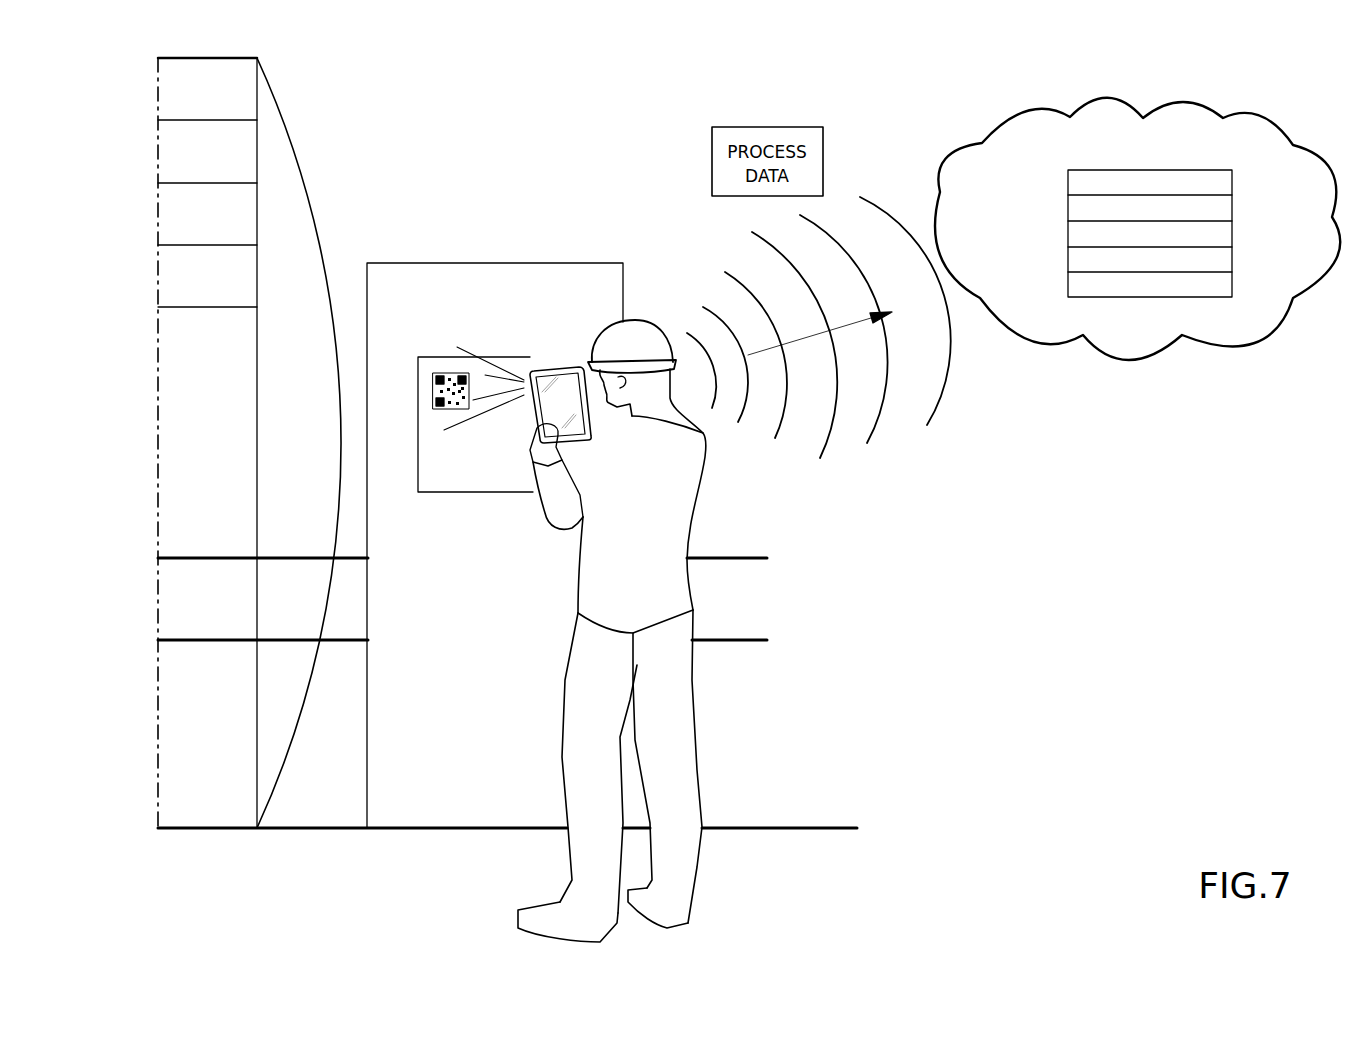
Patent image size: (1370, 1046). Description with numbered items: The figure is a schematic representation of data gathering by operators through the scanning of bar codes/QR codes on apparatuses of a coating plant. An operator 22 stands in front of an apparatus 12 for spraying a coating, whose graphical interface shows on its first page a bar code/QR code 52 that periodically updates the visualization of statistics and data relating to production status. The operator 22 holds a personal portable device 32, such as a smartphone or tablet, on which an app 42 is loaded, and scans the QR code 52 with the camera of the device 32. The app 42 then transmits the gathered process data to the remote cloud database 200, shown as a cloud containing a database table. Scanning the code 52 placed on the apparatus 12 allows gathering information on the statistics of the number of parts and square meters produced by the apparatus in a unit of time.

The apparatus for spraying a coating 12 is at (480, 198).
The operator 22 is at (695, 795).
The personal portable device 32 is at (592, 415).
The app 42 is at (565, 382).
The bar code/QR code 52 is at (450, 385).
The remote cloud database 200 is at (1143, 233).